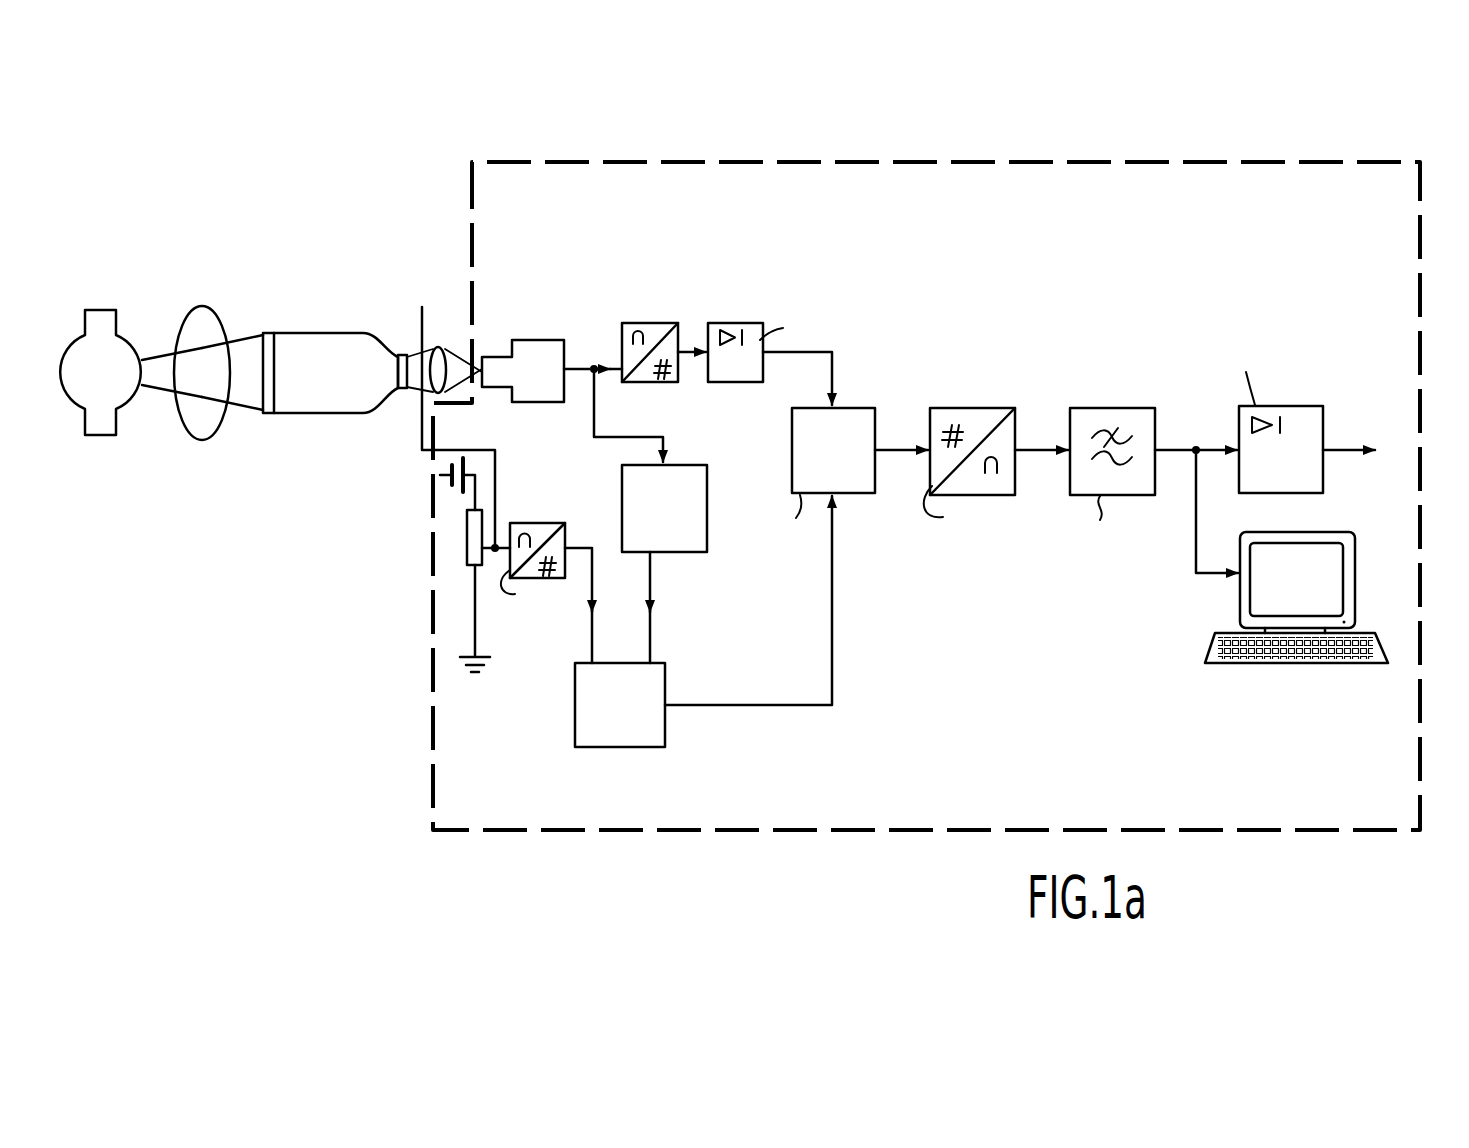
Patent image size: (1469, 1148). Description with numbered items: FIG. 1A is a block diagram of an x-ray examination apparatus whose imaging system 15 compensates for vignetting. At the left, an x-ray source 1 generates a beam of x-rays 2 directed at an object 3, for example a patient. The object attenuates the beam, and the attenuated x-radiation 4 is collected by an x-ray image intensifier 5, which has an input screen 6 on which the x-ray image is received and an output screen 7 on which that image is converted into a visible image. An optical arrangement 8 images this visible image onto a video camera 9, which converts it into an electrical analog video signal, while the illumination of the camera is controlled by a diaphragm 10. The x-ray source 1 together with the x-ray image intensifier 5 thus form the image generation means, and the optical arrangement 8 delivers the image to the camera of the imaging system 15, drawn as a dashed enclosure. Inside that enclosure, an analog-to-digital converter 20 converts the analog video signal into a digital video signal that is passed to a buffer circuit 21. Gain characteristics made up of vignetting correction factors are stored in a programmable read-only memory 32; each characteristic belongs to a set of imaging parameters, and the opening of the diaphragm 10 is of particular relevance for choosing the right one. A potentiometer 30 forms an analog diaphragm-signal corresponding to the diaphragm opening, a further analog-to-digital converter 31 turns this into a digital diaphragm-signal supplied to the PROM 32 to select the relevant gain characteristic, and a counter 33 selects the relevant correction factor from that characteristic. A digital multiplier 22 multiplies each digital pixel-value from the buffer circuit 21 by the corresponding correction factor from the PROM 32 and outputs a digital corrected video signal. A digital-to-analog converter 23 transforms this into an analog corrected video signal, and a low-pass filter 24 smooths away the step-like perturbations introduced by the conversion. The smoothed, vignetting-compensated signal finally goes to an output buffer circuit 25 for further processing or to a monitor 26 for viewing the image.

The x-ray source 1 is at (98, 318).
The beam of x-rays 2 is at (155, 378).
The object 3 is at (200, 320).
The attenuated x-radiation 4 is at (245, 355).
The x-ray image intensifier 5 is at (328, 340).
The input screen 6 is at (268, 332).
The output screen 7 is at (402, 355).
The optical arrangement 8 is at (440, 350).
The video camera 9 is at (547, 345).
The diaphragm 10 is at (423, 310).
The imaging system 15 is at (1360, 163).
The analog-to-digital converter 20 is at (658, 332).
The buffer circuit 21 is at (750, 327).
The digital multiplier 22 is at (862, 410).
The digital-to-analog converter 23 is at (996, 410).
The low-pass filter 24 is at (1134, 410).
The output buffer circuit 25 is at (1308, 407).
The monitor 26 is at (1357, 546).
The potentiometer 30 is at (468, 546).
The analog-to-digital converter 31 is at (548, 523).
The programmable read-only memory 32 is at (600, 747).
The counter 33 is at (697, 493).